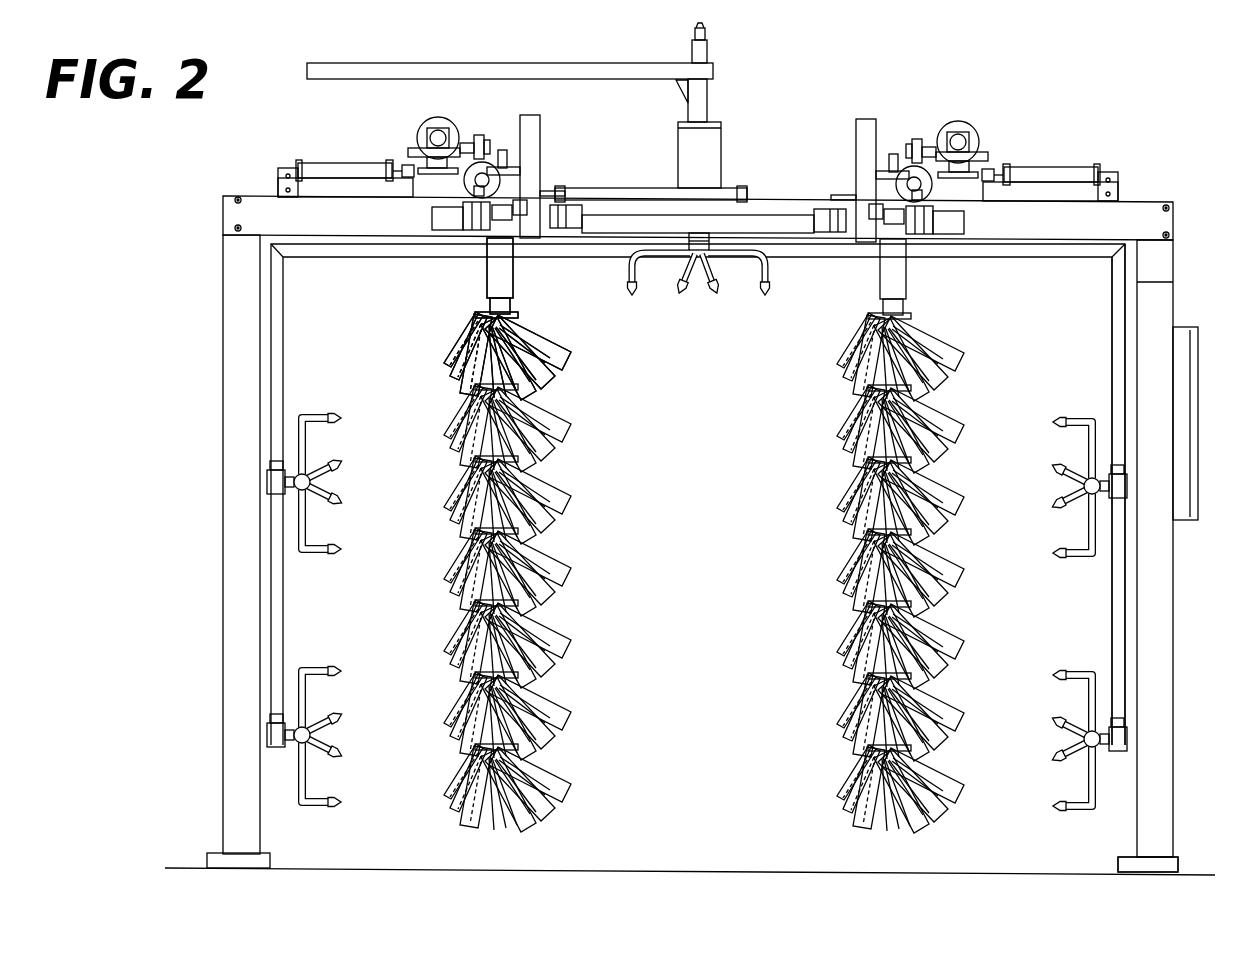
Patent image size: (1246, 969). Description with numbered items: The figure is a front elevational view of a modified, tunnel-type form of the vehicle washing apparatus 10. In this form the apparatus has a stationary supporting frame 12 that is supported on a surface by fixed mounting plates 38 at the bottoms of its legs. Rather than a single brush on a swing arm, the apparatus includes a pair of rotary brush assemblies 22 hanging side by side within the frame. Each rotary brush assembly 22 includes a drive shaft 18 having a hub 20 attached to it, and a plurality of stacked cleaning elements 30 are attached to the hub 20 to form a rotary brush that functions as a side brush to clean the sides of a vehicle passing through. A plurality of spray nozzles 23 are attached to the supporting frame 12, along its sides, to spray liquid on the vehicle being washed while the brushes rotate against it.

The vehicle washing apparatus 10 is at (795, 108).
The supporting frame 12 is at (1017, 222).
The drive shaft 18 is at (497, 306).
The hub 20 is at (520, 303).
The rotary brush assembly 22 is at (590, 460).
The spray nozzles 23 is at (318, 538).
The cleaning elements 30 is at (568, 362).
The fixed mounting plates 38 is at (1178, 865).